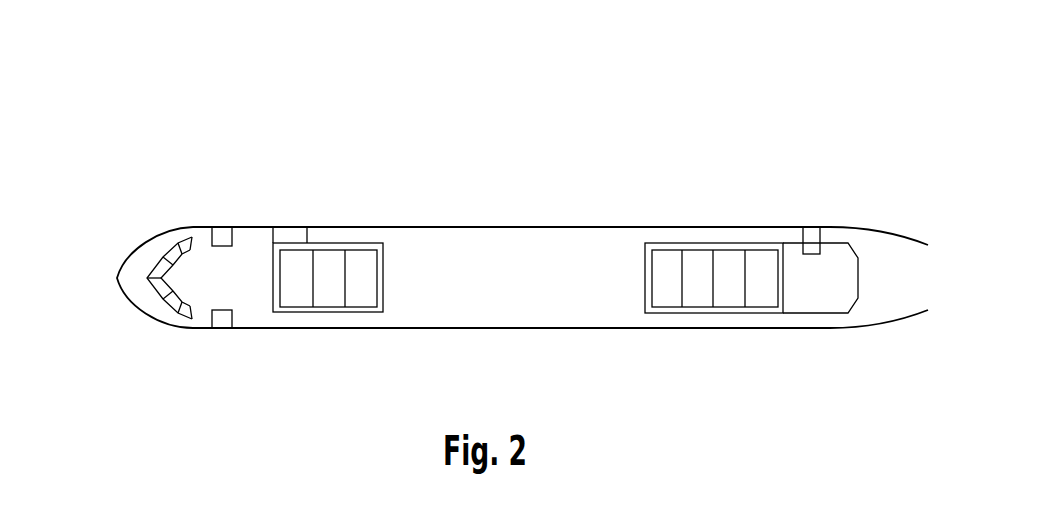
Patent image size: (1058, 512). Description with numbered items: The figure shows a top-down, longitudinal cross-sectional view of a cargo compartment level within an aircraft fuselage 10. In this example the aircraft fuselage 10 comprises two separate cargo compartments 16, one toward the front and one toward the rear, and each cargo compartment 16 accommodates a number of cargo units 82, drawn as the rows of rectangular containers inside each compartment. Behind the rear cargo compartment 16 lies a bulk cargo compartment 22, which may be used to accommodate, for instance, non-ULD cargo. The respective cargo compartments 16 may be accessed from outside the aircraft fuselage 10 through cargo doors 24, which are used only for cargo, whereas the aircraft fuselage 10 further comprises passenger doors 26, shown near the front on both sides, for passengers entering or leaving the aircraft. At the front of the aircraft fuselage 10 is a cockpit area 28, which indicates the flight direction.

The aircraft fuselage 10 is at (197, 122).
The cargo compartment 16 is at (372, 242).
The bulk cargo compartment 22 is at (833, 262).
The cargo door 24 is at (284, 219).
The passenger door 26 is at (222, 232).
The cockpit area 28 is at (134, 321).
The cargo unit 82 is at (290, 262).